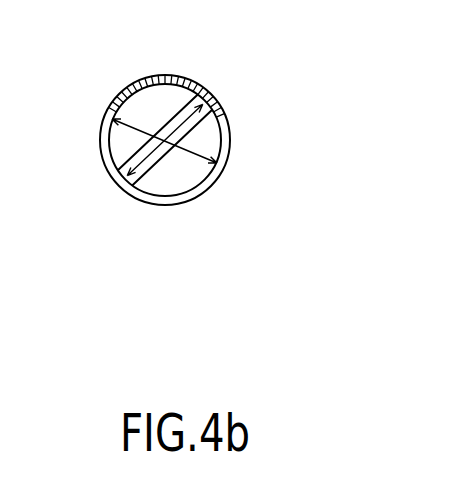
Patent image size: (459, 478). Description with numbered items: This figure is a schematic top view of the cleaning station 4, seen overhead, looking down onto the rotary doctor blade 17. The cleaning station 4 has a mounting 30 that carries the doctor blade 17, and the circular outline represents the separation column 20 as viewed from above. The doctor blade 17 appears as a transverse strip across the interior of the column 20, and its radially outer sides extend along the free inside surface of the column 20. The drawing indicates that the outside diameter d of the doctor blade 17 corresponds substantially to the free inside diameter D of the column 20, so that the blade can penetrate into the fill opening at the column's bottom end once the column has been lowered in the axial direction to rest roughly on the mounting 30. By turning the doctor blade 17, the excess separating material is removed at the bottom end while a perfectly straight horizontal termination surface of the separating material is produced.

The separation column 20 is at (186, 86).
The mounting 30 is at (144, 108).
The rotary doctor blade 17 is at (209, 114).
The free inside diameter D is at (164, 148).
The outside diameter d is at (131, 204).
The cleaning station 4 is at (260, 222).